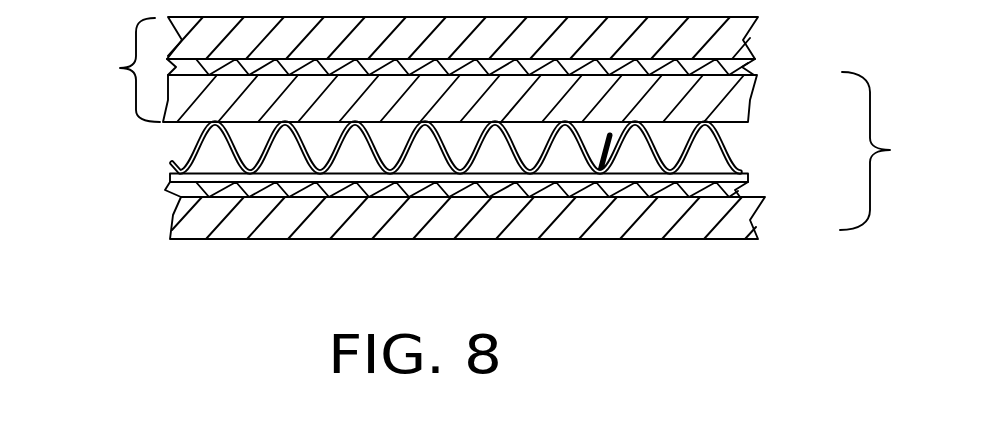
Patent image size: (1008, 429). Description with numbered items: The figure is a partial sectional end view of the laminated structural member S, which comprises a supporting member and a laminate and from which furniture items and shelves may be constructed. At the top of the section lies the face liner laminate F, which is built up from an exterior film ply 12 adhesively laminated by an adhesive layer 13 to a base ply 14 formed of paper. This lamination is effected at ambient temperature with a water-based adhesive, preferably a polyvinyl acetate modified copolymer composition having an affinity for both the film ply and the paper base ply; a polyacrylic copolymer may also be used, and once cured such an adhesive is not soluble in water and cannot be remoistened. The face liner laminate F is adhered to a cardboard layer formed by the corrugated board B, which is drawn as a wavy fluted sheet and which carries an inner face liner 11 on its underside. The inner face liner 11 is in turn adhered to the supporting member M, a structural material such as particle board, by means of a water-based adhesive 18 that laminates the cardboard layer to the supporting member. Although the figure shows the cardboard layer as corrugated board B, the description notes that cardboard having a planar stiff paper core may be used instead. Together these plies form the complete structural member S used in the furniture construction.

The exterior film ply 12 is at (735, 32).
The adhesive layer 13 is at (737, 68).
The base ply 14 is at (737, 104).
The inner face liner 11 is at (750, 173).
The water-based adhesive 18 is at (737, 188).
The corrugated board B is at (160, 138).
The face liner laminate F is at (99, 63).
The supporting member M is at (162, 212).
The structural member S is at (884, 151).